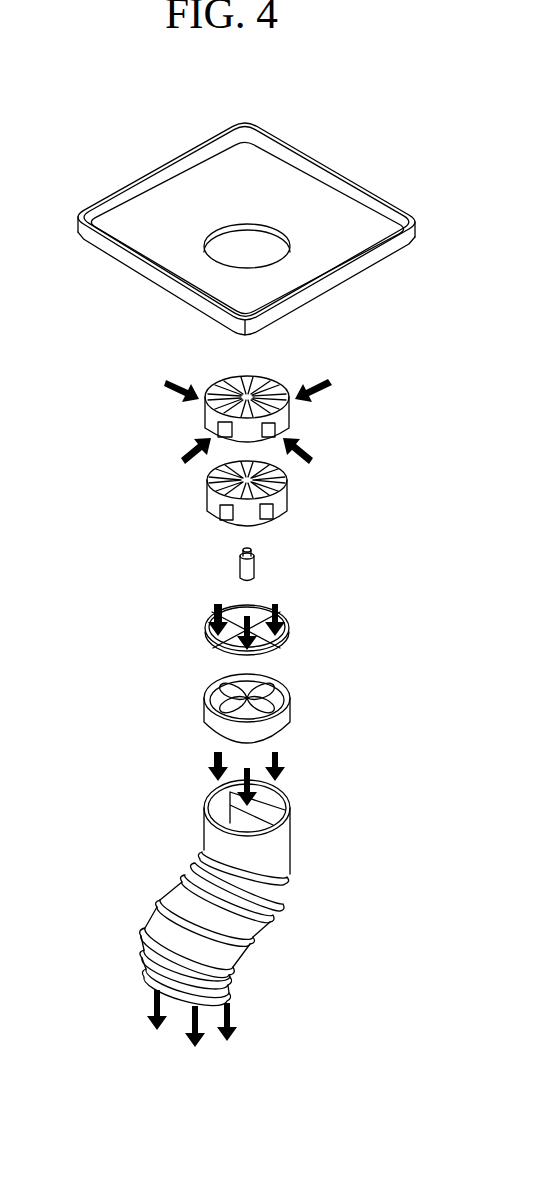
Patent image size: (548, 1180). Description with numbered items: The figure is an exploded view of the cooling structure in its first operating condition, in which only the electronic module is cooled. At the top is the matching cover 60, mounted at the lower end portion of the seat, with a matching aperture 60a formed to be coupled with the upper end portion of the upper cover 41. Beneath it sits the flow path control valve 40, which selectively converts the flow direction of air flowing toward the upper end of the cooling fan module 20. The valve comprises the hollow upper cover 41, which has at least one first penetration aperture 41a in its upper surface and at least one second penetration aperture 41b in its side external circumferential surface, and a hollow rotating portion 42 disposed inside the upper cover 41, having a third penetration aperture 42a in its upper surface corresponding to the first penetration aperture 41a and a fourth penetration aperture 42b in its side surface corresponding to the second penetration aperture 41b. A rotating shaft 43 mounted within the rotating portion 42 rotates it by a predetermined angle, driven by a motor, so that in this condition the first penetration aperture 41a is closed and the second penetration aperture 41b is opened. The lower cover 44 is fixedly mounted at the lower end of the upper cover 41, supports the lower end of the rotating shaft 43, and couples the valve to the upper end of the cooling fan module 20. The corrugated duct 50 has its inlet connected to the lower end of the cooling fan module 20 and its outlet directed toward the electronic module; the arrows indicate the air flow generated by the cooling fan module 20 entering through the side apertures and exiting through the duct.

The matching cover 60 is at (293, 178).
The matching aperture 60a is at (280, 237).
The flow path control valve 40 is at (125, 415).
The upper cover 41 is at (251, 398).
The first penetration aperture 41a is at (247, 376).
The second penetration aperture 41b is at (268, 428).
The rotating portion 42 is at (250, 504).
The third penetration aperture 42a is at (287, 498).
The fourth penetration aperture 42b is at (228, 518).
The rotating shaft 43 is at (240, 568).
The lower cover 44 is at (207, 624).
The cooling fan module 20 is at (311, 717).
The corrugated duct 50 is at (280, 848).